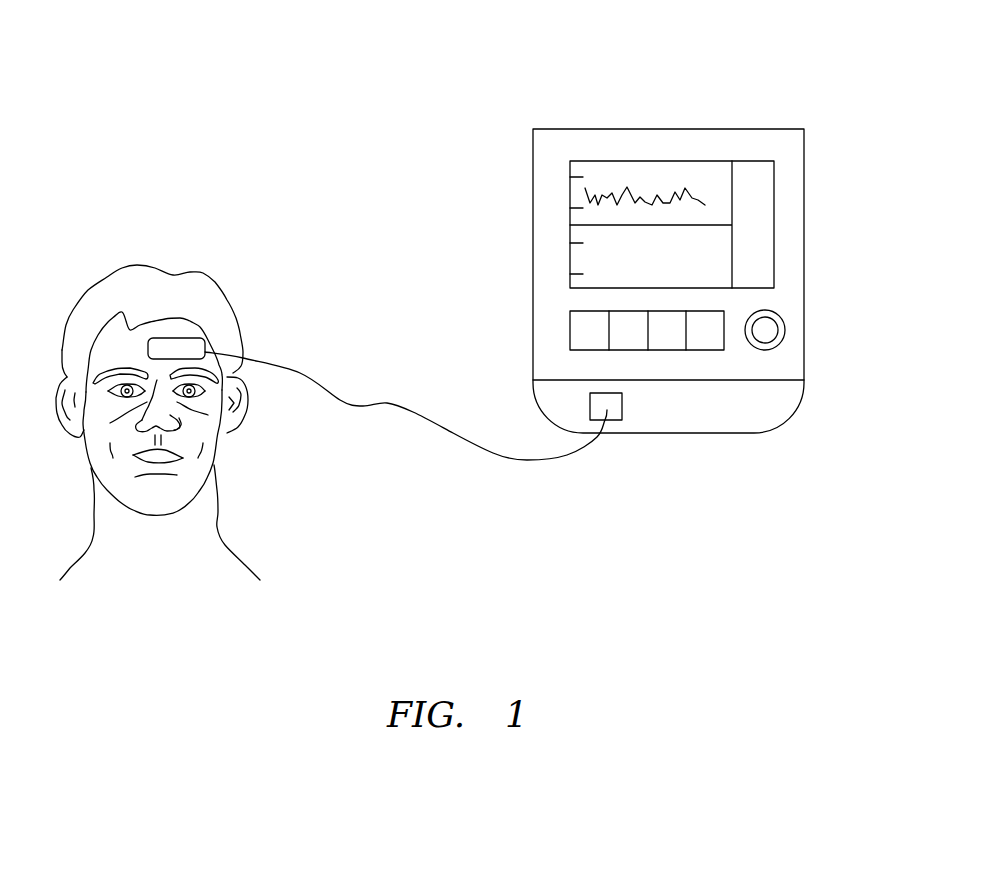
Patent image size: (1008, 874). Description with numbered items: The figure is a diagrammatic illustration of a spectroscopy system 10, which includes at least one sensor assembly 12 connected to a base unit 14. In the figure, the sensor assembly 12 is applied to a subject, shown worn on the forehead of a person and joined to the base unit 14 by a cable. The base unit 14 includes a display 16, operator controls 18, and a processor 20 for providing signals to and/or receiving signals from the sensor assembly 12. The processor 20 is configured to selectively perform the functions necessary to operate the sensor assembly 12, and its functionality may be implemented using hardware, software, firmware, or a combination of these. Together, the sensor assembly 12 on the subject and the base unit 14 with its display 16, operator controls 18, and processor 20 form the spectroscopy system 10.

The spectroscopy system 10 is at (322, 247).
The sensor assembly 12 is at (176, 300).
The base unit 14 is at (701, 219).
The display 16 is at (708, 172).
The operator controls 18 is at (785, 330).
The processor 20 is at (802, 128).